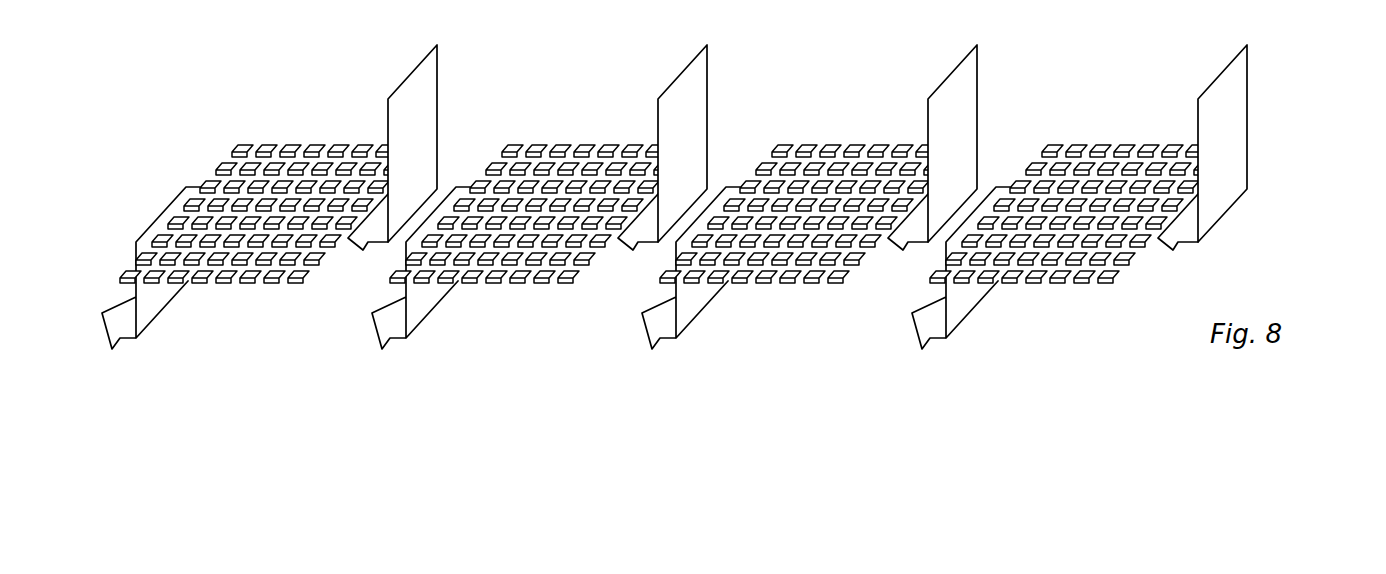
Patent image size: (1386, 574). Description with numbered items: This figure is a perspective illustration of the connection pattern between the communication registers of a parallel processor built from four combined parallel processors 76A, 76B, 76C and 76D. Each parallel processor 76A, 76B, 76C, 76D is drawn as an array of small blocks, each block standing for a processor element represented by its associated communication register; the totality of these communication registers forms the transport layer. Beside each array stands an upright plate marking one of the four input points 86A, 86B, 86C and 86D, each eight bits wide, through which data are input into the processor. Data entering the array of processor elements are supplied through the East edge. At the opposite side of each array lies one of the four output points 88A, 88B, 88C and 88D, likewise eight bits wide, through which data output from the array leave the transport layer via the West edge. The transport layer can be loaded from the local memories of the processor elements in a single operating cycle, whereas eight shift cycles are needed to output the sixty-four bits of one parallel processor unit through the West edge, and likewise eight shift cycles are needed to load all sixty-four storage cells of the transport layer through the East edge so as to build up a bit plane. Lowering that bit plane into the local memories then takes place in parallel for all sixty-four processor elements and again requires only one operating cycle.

The parallel processor 76A is at (232, 300).
The parallel processor 76B is at (518, 300).
The parallel processor 76C is at (770, 293).
The parallel processor 76D is at (1052, 292).
The input point 86A is at (420, 142).
The input point 86B is at (688, 127).
The input point 86C is at (957, 140).
The input point 86D is at (1227, 130).
The output point 88A is at (145, 303).
The output point 88B is at (395, 325).
The output point 88C is at (662, 323).
The output point 88D is at (960, 308).